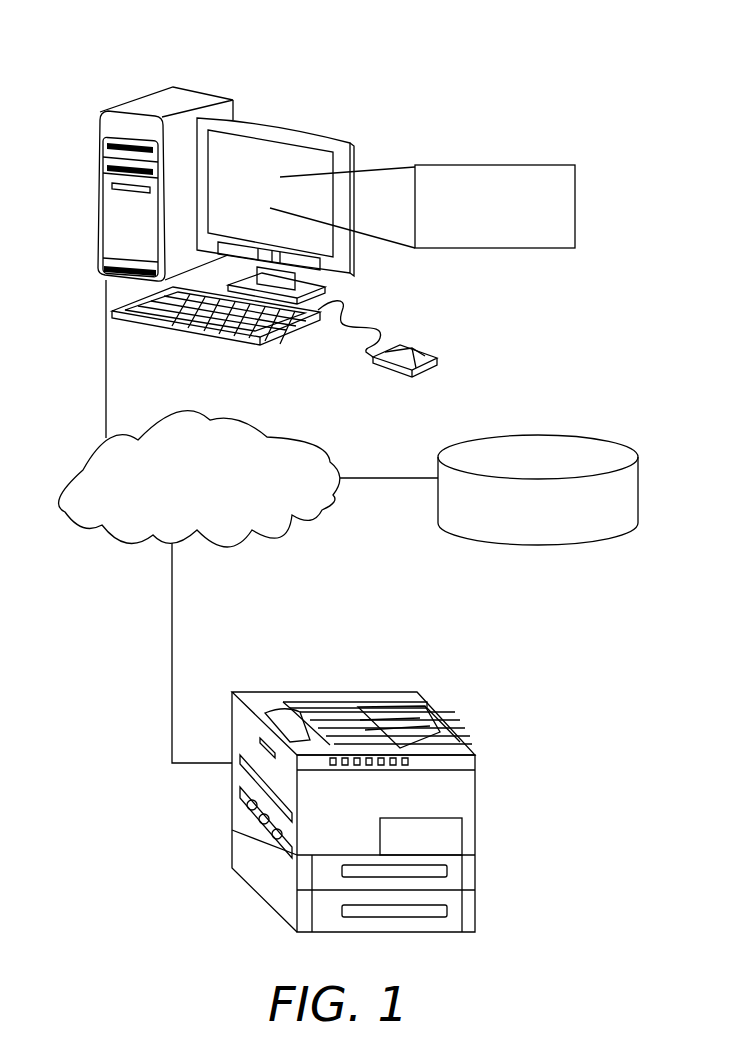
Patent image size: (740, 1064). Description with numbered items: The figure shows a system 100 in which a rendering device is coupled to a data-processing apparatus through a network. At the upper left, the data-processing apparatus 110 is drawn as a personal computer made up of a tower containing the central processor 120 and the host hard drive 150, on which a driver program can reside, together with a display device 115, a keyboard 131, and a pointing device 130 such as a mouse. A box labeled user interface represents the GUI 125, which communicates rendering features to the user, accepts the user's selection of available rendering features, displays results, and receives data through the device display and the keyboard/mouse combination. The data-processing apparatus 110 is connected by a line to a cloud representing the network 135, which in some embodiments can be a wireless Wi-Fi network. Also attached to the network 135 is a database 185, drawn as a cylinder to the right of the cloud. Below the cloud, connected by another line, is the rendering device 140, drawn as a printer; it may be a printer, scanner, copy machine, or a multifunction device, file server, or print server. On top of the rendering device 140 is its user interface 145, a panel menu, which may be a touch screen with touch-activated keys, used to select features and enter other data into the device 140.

The system 100 is at (440, 60).
The data-processing apparatus 110 is at (278, 120).
The display device 115 is at (298, 158).
The central processor 120 is at (98, 270).
The GUI 125 is at (518, 165).
The pointing device 130 is at (415, 345).
The keyboard 131 is at (183, 328).
The network 135 is at (235, 417).
The rendering device 140 is at (370, 692).
The user interface 145 is at (413, 722).
The hard drive 150 is at (135, 98).
The database 185 is at (580, 435).